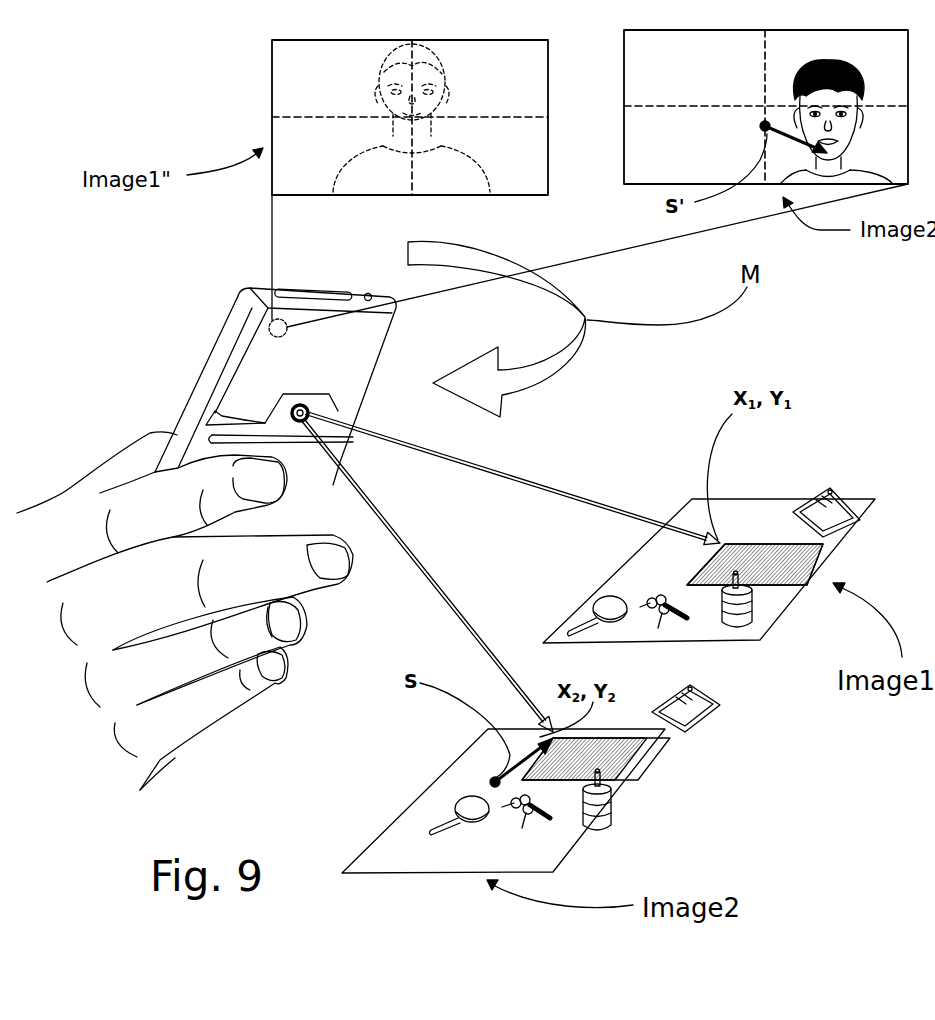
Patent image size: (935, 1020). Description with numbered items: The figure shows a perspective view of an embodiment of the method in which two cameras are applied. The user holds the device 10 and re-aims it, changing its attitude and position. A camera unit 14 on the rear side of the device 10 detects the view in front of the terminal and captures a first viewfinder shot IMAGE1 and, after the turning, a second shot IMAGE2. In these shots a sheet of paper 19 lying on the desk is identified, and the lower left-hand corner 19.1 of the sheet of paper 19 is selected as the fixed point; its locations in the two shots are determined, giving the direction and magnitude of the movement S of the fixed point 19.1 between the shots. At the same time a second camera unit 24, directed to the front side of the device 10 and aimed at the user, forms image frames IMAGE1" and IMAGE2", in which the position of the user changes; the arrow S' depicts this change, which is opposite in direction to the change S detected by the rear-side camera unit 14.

The device 10 is at (230, 358).
The camera unit 14 is at (310, 412).
The sheet of paper 19 is at (773, 575).
The fixed point 19.1 is at (722, 540).
The camera unit 24 is at (266, 328).